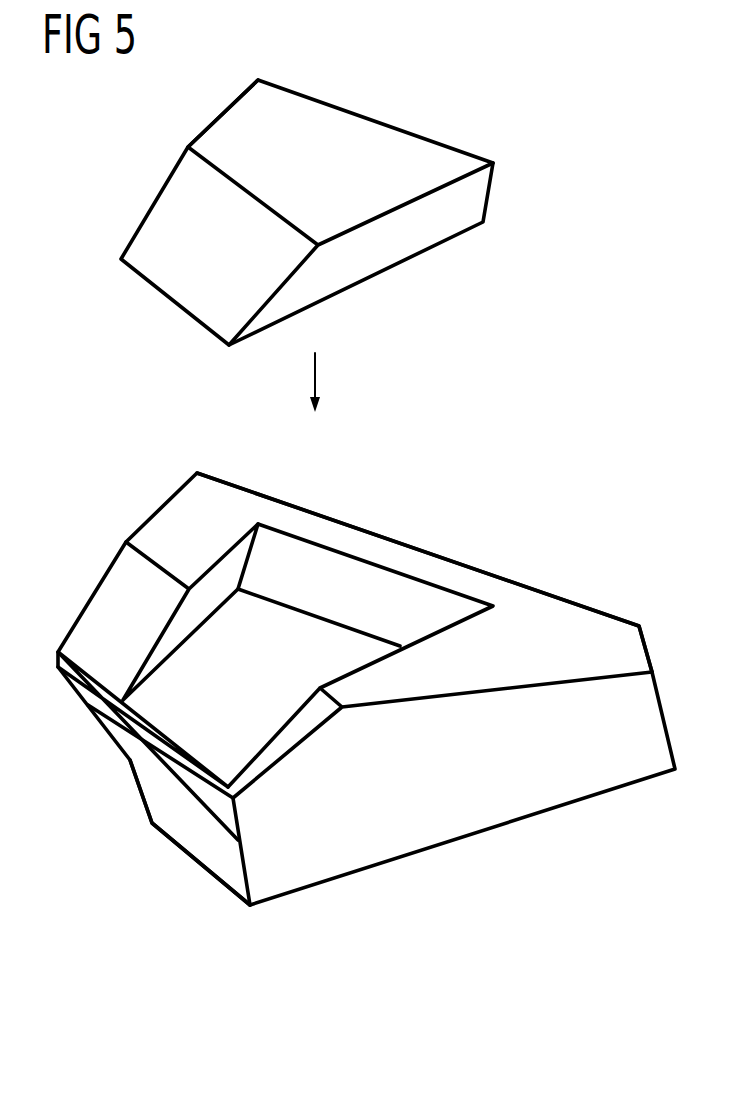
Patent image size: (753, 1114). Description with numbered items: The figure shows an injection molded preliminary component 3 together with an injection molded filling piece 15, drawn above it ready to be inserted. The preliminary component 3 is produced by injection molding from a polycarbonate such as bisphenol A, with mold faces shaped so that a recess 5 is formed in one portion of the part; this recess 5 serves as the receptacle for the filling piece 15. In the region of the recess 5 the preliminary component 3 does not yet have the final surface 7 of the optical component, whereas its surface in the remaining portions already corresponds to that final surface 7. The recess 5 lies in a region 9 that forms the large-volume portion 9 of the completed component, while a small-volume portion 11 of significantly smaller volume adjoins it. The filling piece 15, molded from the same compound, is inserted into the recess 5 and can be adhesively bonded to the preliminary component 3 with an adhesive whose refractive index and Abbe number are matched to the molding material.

The preliminary component 3 is at (489, 495).
The recess 5 is at (318, 560).
The final surface 7 is at (573, 618).
The large-volume portion 9 is at (178, 893).
The small-volume portion 11 is at (84, 758).
The filling piece 15 is at (395, 148).